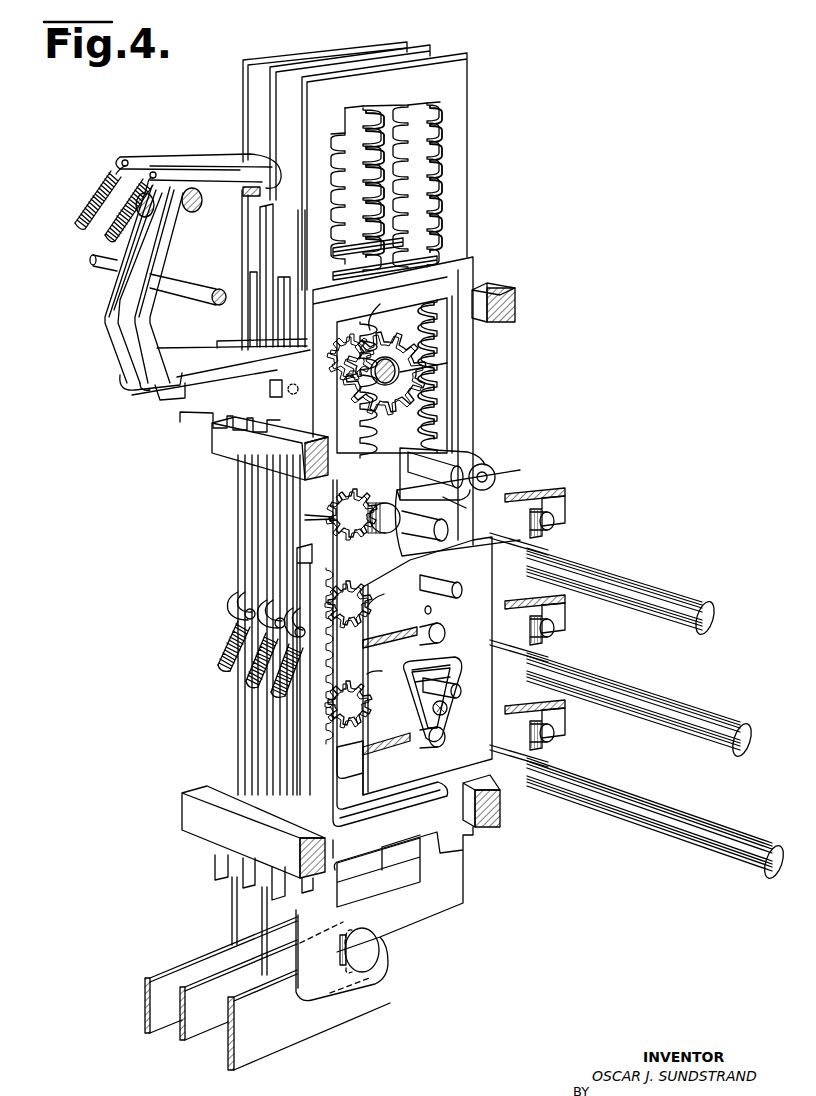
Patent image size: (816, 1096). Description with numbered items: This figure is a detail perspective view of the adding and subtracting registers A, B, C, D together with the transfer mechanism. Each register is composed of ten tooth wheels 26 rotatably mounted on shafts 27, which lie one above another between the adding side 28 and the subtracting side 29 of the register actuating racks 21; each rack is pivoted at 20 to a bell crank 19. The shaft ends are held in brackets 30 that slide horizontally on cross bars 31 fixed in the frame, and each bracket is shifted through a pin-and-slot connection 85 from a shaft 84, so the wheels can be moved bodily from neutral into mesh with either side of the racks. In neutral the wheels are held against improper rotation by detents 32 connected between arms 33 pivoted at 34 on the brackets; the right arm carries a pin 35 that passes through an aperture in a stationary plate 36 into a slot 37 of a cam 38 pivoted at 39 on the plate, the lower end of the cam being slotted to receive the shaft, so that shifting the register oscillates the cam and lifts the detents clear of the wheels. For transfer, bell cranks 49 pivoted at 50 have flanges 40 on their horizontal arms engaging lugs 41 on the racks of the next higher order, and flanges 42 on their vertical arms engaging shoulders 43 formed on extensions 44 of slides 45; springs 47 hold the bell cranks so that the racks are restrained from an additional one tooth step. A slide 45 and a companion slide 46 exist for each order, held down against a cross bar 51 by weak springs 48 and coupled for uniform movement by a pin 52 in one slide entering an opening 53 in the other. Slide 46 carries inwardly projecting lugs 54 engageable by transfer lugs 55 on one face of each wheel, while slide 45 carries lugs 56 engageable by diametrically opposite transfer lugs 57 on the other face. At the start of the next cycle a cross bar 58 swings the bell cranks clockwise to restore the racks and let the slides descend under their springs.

The bell crank 19 is at (240, 1057).
The pivot 20 is at (367, 940).
The register actuating rack 21 is at (306, 108).
The ten tooth wheel 26 is at (420, 333).
The shaft 27 is at (392, 380).
The adding side 28 is at (327, 176).
The subtracting side 29 is at (461, 156).
The bracket 30 is at (493, 612).
The cross bar 31 is at (533, 492).
The detent 32 is at (353, 467).
The arm 33 is at (465, 467).
The pivot 34 is at (495, 473).
The pin 35 is at (450, 463).
The stationary plate 36 is at (380, 763).
The slot 37 is at (453, 664).
The cam 38 is at (415, 701).
The pivot 39 is at (457, 713).
The flange 40 is at (249, 178).
The lug 41 is at (256, 197).
The flange 42 is at (173, 395).
The shoulder 43 is at (190, 392).
The extension 44 is at (215, 414).
The slide 45 is at (257, 288).
The slide 46 is at (257, 277).
The spring 47 is at (110, 232).
The weak spring 48 is at (278, 692).
The bell crank 49 is at (230, 225).
The pivot 50 is at (197, 212).
The cross bar 51 is at (233, 450).
The pin 52 is at (274, 387).
The opening 53 is at (272, 380).
The lug 54 is at (447, 363).
The transfer lug 55 is at (403, 377).
The lug 56 is at (305, 515).
The transfer lug 57 is at (305, 520).
The cross bar 58 is at (200, 293).
The shaft 84 is at (640, 603).
The pin-and-slot connection 85 is at (572, 517).
The register A is at (376, 308).
The register B is at (444, 513).
The register C is at (382, 595).
The register D is at (381, 671).